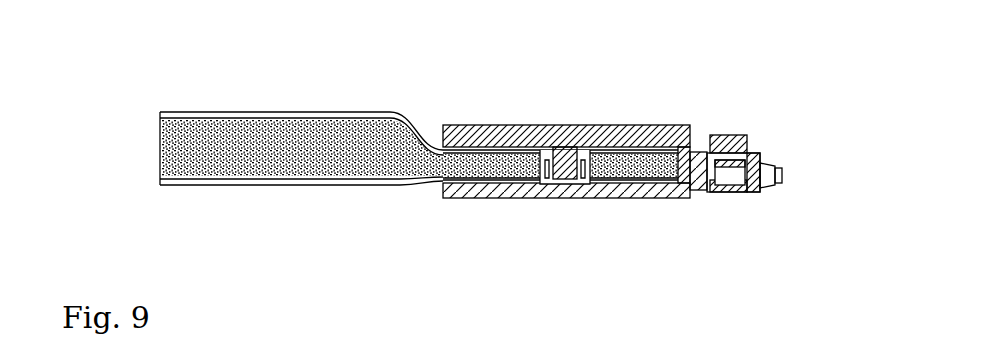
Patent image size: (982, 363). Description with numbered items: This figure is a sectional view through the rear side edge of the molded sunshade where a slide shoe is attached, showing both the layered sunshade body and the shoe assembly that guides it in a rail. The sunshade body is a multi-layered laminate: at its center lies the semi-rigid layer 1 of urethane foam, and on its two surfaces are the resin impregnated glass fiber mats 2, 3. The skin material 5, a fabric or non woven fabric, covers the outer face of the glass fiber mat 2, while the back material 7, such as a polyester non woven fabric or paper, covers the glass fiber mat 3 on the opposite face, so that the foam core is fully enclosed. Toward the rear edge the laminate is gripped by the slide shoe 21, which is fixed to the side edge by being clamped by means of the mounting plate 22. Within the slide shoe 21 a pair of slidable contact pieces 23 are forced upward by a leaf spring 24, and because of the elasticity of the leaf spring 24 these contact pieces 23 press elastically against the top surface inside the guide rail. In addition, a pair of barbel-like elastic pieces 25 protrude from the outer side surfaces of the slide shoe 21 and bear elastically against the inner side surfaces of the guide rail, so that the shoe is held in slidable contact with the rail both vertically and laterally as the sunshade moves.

The semi-rigid layer 1 is at (353, 123).
The glass fiber mat 2 is at (297, 180).
The glass fiber mat 3 is at (250, 120).
The skin material 5 is at (200, 183).
The back material 7 is at (193, 112).
The slide shoe 21 is at (605, 188).
The mounting plate 22 is at (627, 127).
The slidable contact piece 23 is at (725, 135).
The leaf spring 24 is at (723, 173).
The barbel-like elastic piece 25 is at (785, 177).